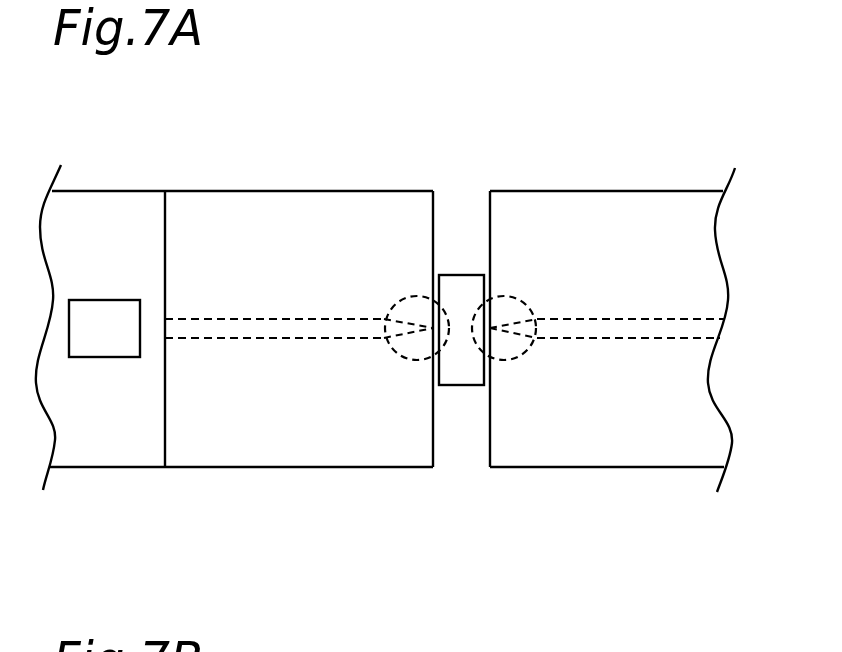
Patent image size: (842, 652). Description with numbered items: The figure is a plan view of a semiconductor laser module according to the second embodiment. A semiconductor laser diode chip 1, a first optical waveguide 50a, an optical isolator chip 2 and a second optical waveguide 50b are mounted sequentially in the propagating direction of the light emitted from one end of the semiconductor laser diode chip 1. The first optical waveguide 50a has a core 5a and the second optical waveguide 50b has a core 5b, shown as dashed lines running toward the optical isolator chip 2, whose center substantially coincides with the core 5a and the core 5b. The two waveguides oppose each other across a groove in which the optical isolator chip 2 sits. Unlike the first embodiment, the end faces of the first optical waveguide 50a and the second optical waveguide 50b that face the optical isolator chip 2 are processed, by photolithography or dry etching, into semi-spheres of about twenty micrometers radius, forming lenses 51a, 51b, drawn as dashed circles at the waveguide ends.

The semiconductor laser diode chip 1 is at (106, 313).
The optical isolator chip 2 is at (468, 308).
The core of the first optical waveguide 5a is at (329, 320).
The core of the second optical waveguide 5b is at (670, 320).
The first optical waveguide 50a is at (246, 220).
The second optical waveguide 50b is at (592, 215).
The lens 51a is at (413, 362).
The lens 51b is at (508, 362).